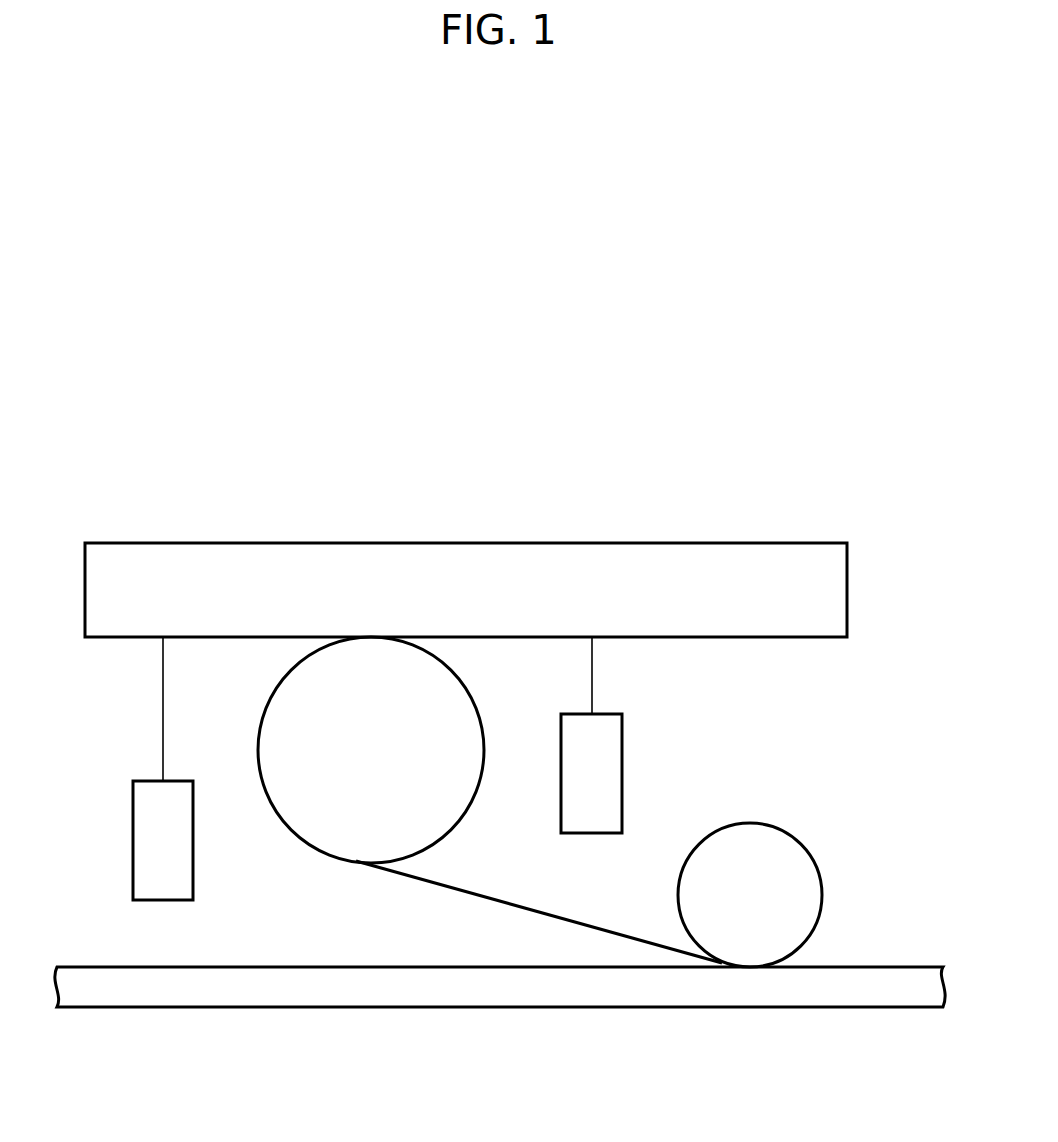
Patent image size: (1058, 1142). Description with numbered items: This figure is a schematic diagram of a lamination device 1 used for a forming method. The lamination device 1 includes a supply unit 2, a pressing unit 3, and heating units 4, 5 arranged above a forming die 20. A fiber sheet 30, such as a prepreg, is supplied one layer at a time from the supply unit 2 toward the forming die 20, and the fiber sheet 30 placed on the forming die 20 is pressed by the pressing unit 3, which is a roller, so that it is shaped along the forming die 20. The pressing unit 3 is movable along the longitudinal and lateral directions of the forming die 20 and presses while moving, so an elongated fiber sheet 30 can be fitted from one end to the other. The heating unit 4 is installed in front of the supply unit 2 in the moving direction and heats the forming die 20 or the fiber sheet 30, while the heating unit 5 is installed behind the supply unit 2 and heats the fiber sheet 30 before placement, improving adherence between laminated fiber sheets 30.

The lamination device 1 is at (730, 458).
The supply unit 2 is at (462, 680).
The pressing unit 3 is at (782, 822).
The heating unit 4 is at (133, 830).
The heating unit 5 is at (622, 769).
The forming die 20 is at (399, 1009).
The fiber sheet 30 is at (579, 918).